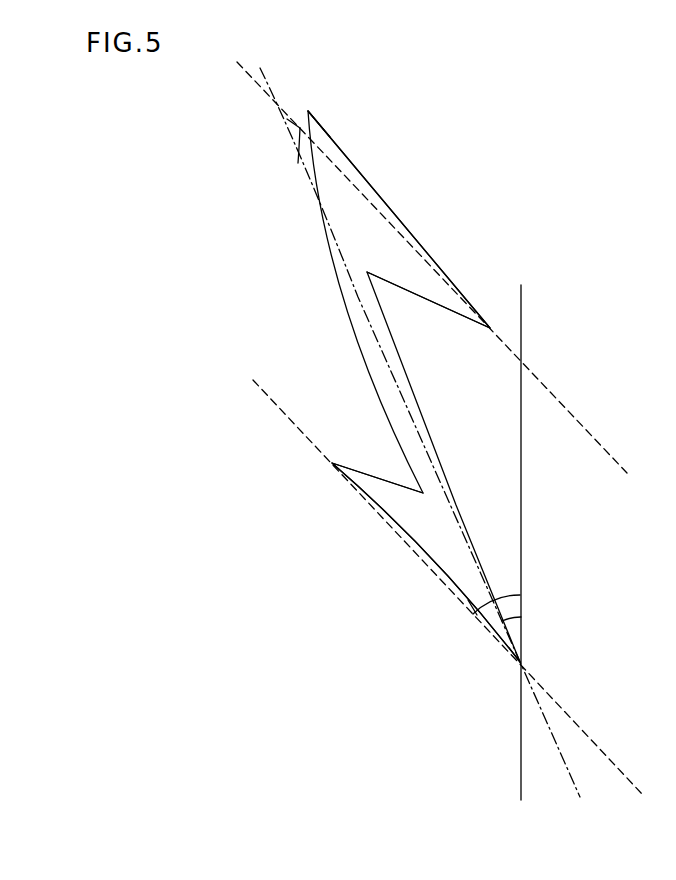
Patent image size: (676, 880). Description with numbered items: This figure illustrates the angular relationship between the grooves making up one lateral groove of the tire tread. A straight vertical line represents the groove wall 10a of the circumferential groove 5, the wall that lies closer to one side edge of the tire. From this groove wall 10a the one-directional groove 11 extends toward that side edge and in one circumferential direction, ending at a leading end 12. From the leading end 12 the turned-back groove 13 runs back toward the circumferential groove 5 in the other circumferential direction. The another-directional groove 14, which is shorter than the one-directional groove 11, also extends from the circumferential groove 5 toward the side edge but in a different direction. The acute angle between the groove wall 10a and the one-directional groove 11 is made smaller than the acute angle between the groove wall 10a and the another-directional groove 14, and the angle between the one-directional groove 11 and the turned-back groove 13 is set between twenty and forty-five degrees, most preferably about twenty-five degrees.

The circumferential groove 5 is at (571, 377).
The groove wall 10a is at (523, 433).
The one-directional groove 11 is at (387, 390).
The leading end 12 is at (308, 111).
The turned-back groove 13 is at (427, 282).
The another-directional groove 14 is at (423, 520).